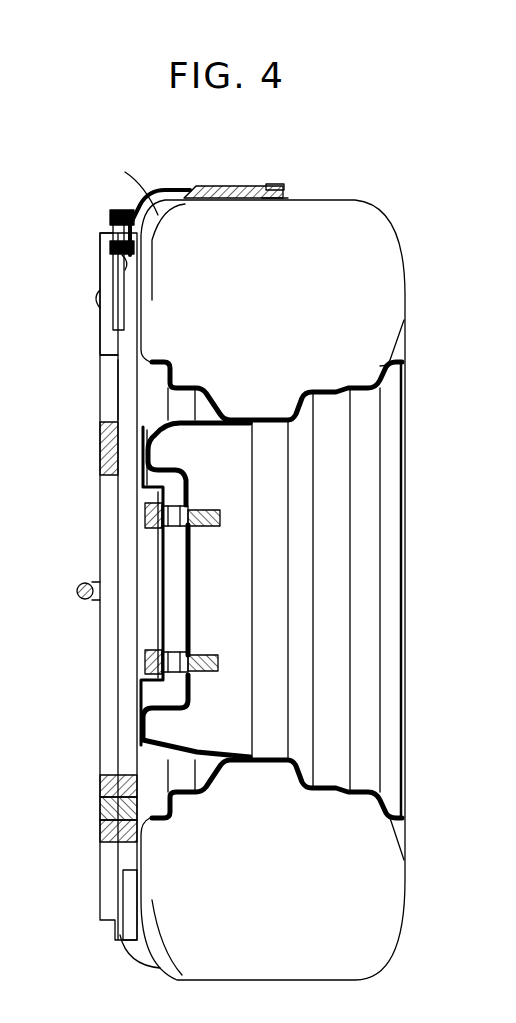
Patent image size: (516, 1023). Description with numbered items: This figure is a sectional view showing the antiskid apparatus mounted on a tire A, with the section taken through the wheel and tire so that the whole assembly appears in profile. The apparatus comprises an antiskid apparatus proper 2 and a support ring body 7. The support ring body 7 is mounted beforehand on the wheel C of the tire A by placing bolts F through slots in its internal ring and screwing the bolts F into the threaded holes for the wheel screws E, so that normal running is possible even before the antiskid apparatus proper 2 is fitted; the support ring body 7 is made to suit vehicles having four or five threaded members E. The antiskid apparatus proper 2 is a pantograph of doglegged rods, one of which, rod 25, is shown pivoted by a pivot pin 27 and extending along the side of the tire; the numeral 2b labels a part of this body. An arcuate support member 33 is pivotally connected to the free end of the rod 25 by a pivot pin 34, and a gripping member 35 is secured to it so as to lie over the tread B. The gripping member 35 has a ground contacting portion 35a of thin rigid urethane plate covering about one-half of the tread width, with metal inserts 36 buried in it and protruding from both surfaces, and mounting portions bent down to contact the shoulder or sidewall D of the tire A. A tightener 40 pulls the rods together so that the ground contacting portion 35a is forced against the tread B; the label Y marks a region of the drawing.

The antiskid apparatus proper 2 is at (103, 214).
The bracket portion 2b is at (128, 374).
The support ring body 7 is at (96, 652).
The rod 25 is at (98, 702).
The pivot pin 27 is at (96, 808).
The arcuate support member 33 is at (118, 296).
The pivot pin 34 is at (95, 306).
The gripping member 35 is at (110, 258).
The ground contacting portion 35a is at (284, 192).
The metal insert 36 is at (220, 186).
The tightener 40 is at (76, 592).
The tire A is at (392, 290).
The tread B is at (360, 202).
The wheel C is at (185, 478).
The shoulder or sidewall D is at (132, 183).
The threaded member E is at (198, 512).
The bolt F is at (147, 527).
The band Y is at (157, 193).